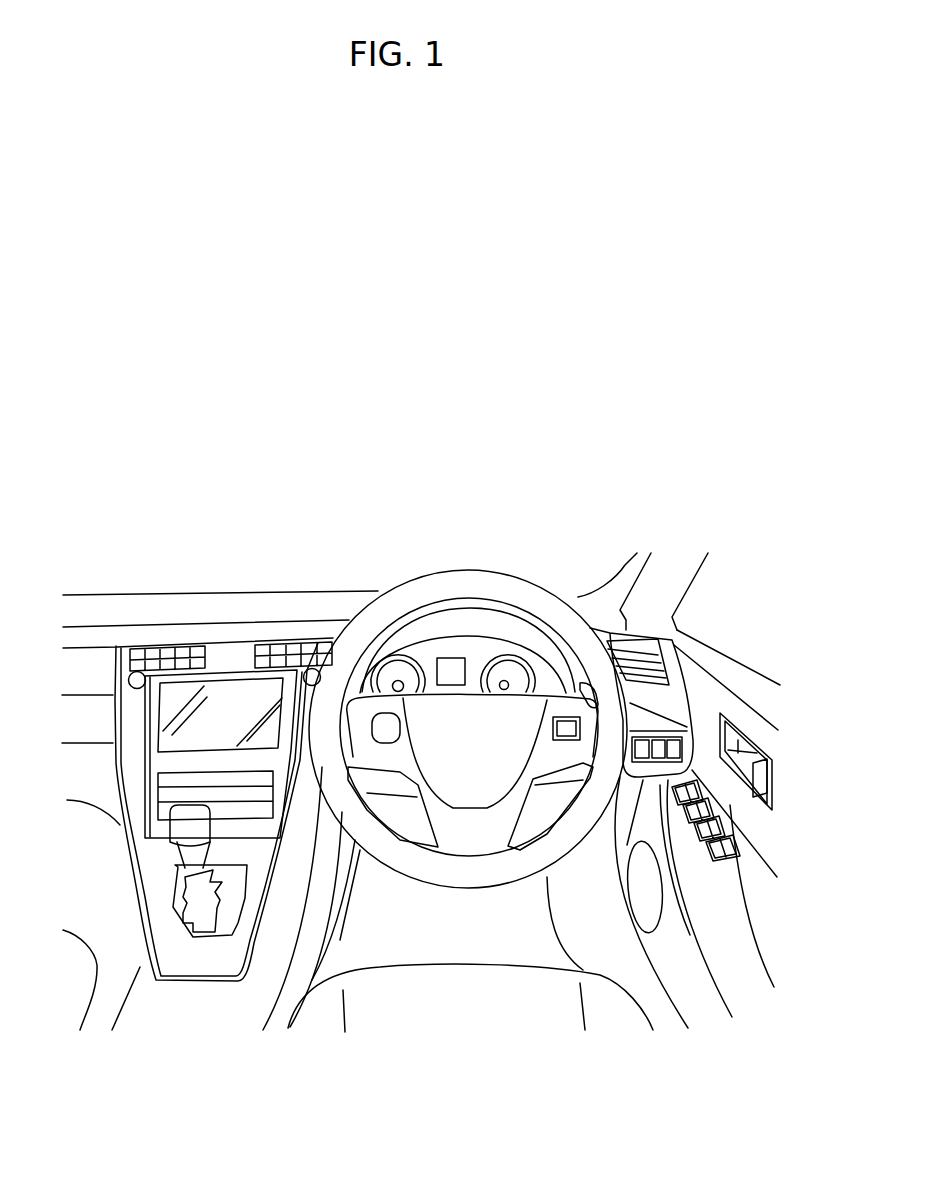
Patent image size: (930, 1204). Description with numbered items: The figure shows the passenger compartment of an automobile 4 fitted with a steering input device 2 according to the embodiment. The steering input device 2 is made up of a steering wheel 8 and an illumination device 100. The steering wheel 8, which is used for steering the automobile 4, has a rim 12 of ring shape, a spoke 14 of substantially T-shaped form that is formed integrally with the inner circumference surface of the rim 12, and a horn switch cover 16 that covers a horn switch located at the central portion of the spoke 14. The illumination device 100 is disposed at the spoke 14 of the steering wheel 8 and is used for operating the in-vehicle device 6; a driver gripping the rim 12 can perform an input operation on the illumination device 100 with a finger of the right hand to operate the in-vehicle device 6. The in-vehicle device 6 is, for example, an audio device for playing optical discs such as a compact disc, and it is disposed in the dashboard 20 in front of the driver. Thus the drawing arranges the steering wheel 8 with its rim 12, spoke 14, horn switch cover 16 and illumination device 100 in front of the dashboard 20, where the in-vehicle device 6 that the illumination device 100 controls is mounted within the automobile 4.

The steering input device 2 is at (436, 571).
The automobile 4 is at (509, 493).
The in-vehicle device 6 is at (185, 727).
The steering wheel 8 is at (530, 594).
The rim 12 is at (387, 604).
The spoke 14 is at (547, 764).
The horn switch cover 16 is at (470, 782).
The dashboard 20 is at (223, 607).
The illumination device 100 is at (583, 731).